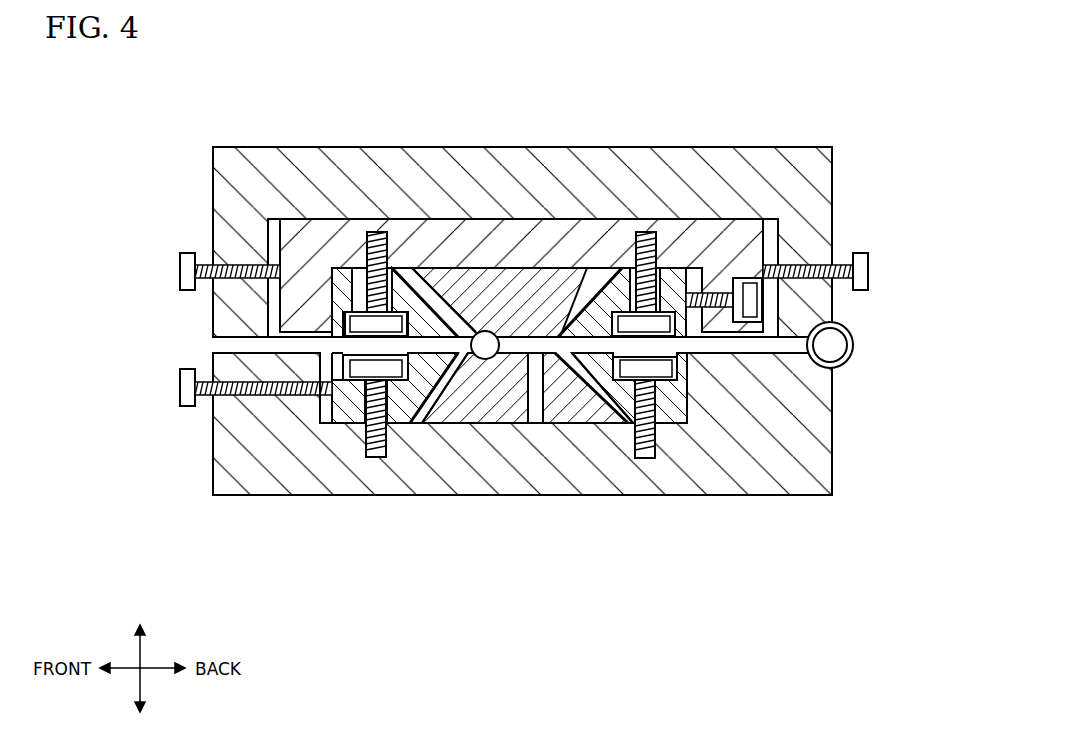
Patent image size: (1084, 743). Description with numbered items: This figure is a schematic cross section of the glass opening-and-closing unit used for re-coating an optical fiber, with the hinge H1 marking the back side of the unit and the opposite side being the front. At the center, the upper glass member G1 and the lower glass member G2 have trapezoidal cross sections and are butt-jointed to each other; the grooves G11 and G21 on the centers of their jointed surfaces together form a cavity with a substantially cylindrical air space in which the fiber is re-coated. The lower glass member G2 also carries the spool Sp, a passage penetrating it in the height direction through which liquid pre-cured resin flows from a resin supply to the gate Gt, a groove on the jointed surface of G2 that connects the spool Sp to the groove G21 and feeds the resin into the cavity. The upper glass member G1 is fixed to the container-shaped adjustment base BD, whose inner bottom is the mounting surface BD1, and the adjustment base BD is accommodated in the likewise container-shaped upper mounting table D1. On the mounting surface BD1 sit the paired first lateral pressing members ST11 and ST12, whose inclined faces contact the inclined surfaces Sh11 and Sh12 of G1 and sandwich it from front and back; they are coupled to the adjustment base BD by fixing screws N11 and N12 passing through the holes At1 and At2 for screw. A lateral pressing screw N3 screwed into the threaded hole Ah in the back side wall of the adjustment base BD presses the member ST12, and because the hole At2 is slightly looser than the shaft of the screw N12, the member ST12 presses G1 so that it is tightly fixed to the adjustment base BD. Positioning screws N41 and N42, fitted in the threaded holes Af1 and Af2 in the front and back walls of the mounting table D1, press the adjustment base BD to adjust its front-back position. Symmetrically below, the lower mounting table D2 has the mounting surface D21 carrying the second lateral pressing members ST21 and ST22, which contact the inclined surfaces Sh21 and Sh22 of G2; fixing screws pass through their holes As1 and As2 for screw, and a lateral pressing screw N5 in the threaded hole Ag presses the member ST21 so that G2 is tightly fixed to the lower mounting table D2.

The upper mounting table D1 is at (536, 147).
The lower mounting table D2 is at (525, 497).
The adjustment base BD is at (610, 233).
The mounting surface of the adjustment base BD1 is at (717, 290).
The first lateral pressing member ST11 is at (338, 302).
The first lateral pressing member ST12 is at (690, 337).
The second lateral pressing member ST21 is at (350, 420).
The second lateral pressing member ST22 is at (686, 400).
The inclined surface of the upper glass member Sh11 is at (419, 290).
The inclined surface of the upper glass member Sh12 is at (587, 303).
The inclined surface of the lower glass member Sh21 is at (405, 420).
The inclined surface of the lower glass member Sh22 is at (578, 378).
The upper glass member G1 is at (453, 282).
The lower glass member G2 is at (432, 415).
The groove G11 is at (476, 280).
The groove G21 is at (460, 365).
The gate Gt is at (488, 360).
The spool Sp is at (538, 420).
The fixing screw N11 is at (375, 232).
The fixing screw N12 is at (645, 232).
The hole for screw At1 is at (343, 268).
The hole for screw At2 is at (658, 287).
The hole for screw As1 is at (373, 457).
The hole for screw As2 is at (648, 458).
The lateral pressing screw N3 is at (740, 296).
The threaded hole Ah is at (755, 279).
The threaded hole Af1 is at (235, 262).
The threaded hole Af2 is at (810, 264).
The positioning screw N41 is at (180, 272).
The positioning screw N42 is at (868, 270).
The lateral pressing screw N5 is at (182, 388).
The threaded hole Ag is at (333, 410).
The mounting surface of the lower mounting table D21 is at (598, 418).
The hinge H1 is at (845, 362).